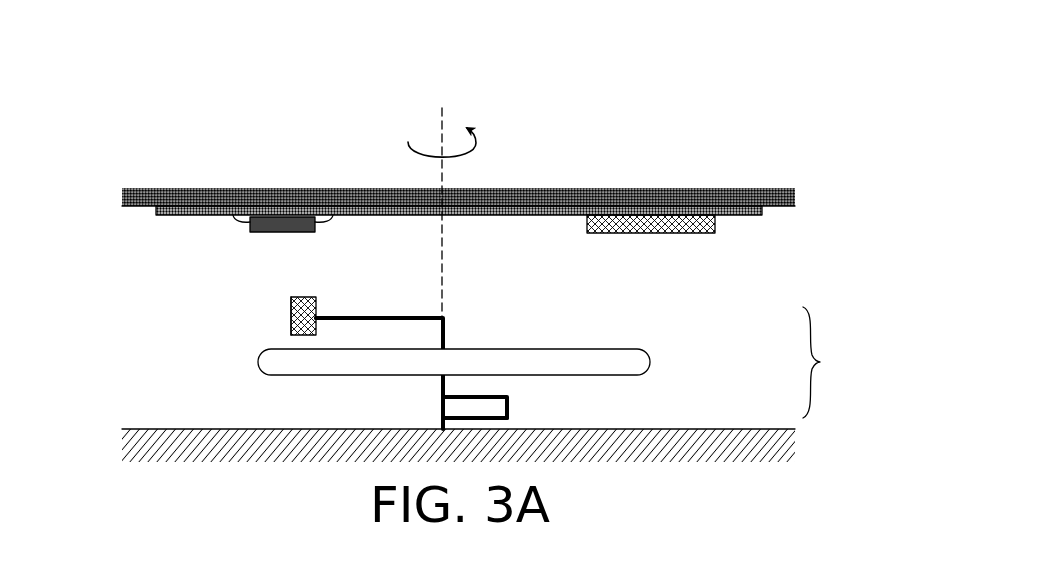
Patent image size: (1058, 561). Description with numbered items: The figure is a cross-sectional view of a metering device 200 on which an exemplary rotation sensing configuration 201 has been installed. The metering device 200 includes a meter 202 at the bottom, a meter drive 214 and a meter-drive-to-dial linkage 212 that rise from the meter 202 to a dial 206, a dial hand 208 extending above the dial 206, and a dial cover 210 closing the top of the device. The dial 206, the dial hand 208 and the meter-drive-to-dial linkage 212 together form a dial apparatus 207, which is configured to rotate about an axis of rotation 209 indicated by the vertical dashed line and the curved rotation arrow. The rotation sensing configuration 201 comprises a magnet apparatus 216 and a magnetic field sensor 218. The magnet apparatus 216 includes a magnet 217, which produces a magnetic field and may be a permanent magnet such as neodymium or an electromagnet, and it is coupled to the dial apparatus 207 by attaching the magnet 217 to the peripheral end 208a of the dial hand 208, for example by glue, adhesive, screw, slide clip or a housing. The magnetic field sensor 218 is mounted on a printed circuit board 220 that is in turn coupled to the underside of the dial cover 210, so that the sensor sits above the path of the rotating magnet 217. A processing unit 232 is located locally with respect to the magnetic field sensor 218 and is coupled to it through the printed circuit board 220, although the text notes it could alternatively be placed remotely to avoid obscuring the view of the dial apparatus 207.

The metering device 200 is at (703, 91).
The rotation sensing configuration 201 is at (127, 341).
The meter 202 is at (245, 450).
The dial 206 is at (655, 373).
The dial apparatus 207 is at (831, 362).
The dial hand 208 is at (412, 316).
The peripheral end 208a is at (325, 316).
The axis of rotation 209 is at (442, 189).
The dial cover 210 is at (745, 191).
The meter-drive-to-dial linkage 212 is at (509, 398).
The meter drive 214 is at (510, 418).
The magnet apparatus 216 is at (270, 311).
The magnet 217 is at (292, 329).
The magnetic field sensor 218 is at (248, 230).
The printed circuit board 220 is at (155, 215).
The processing unit 232 is at (706, 236).